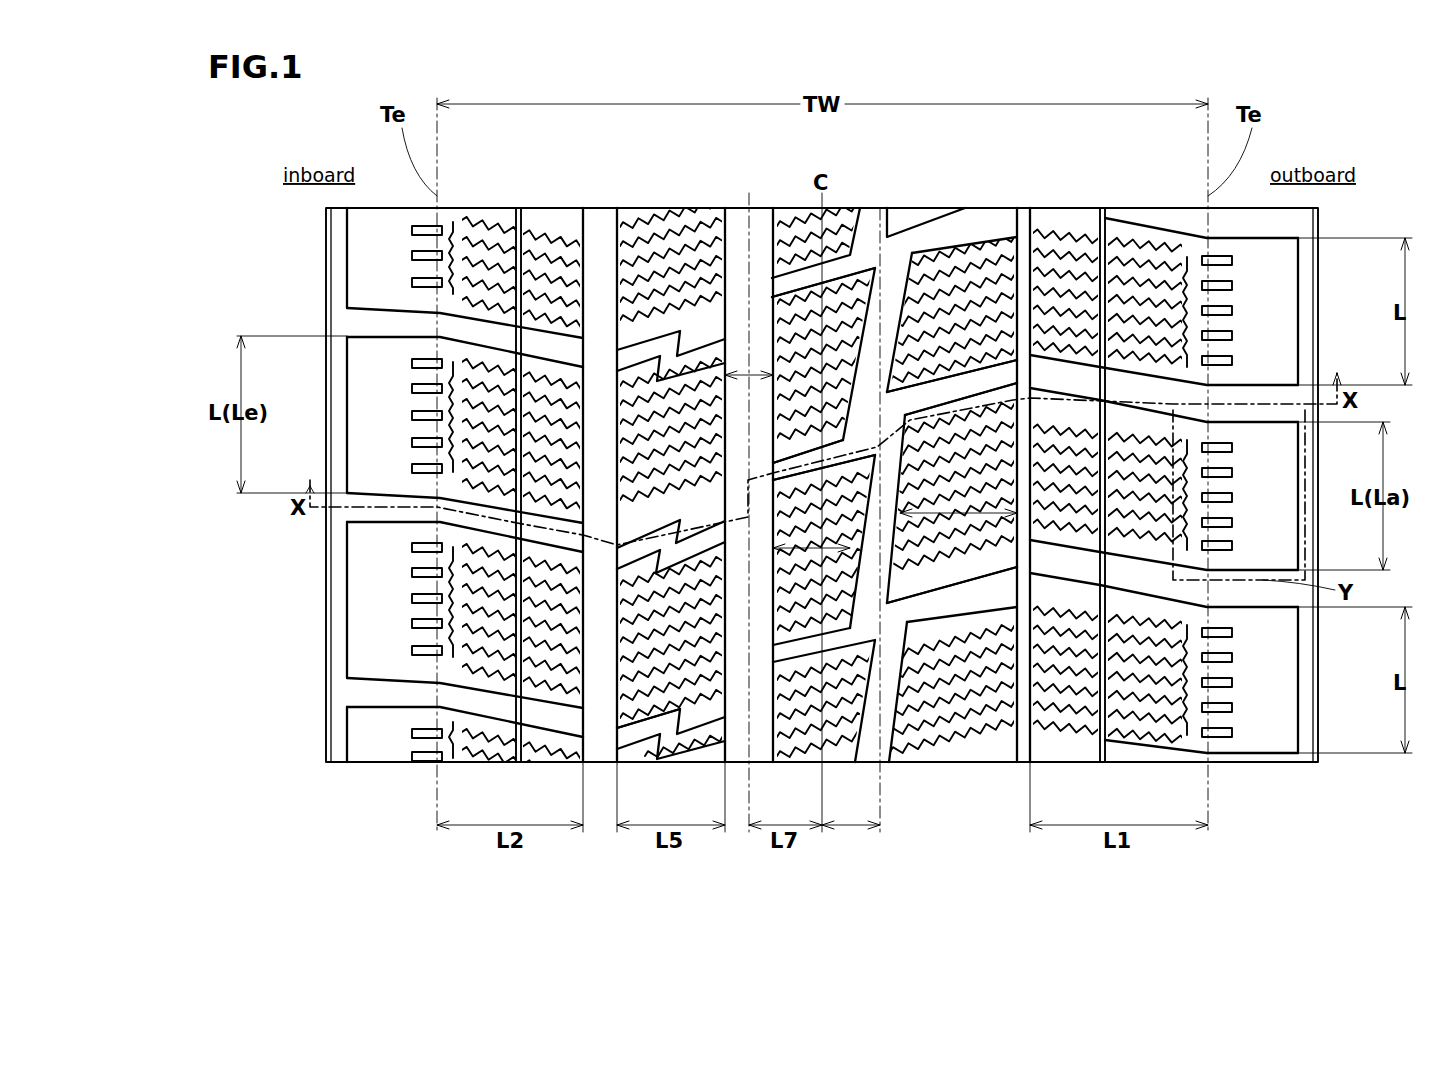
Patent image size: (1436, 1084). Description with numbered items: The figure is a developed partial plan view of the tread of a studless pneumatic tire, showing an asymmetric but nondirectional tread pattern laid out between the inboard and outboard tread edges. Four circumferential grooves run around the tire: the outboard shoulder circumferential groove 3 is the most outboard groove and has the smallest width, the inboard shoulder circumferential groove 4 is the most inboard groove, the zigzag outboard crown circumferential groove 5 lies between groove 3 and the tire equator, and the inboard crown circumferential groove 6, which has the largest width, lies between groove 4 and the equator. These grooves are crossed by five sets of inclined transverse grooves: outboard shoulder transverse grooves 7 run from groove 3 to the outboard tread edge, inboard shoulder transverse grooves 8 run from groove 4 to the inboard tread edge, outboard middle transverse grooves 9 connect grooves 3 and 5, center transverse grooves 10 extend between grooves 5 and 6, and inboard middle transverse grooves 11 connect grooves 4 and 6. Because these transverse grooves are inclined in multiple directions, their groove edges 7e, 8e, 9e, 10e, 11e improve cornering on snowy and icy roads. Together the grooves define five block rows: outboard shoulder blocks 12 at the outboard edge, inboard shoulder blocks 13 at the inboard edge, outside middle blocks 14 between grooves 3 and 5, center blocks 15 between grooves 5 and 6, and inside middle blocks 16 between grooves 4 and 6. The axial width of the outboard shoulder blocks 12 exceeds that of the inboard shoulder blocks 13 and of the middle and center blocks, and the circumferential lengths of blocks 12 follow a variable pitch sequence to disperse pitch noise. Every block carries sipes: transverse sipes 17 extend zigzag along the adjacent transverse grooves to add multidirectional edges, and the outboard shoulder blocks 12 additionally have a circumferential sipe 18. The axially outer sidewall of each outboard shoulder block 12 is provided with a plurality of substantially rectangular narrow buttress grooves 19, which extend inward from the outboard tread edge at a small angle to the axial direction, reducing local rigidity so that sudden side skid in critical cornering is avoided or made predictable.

The outboard shoulder circumferential groove 3 is at (1023, 250).
The inboard shoulder circumferential groove 4 is at (597, 248).
The outboard crown circumferential groove 5 is at (870, 245).
The inboard crown circumferential groove 6 is at (736, 245).
The outboard shoulder transverse grooves 7 is at (1140, 385).
The groove edges of outboard shoulder transverse grooves 7e is at (1130, 387).
The inboard shoulder transverse grooves 8 is at (590, 362).
The groove edges of inboard shoulder transverse grooves 8e is at (470, 722).
The outboard middle transverse grooves 9 is at (948, 600).
The groove edges of outboard middle transverse grooves 9e is at (960, 455).
The center transverse grooves 10 is at (836, 640).
The groove edges of center transverse grooves 10e is at (772, 300).
The inboard middle transverse grooves 11 is at (624, 742).
The groove edges of inboard middle transverse grooves 11e is at (655, 335).
The outboard shoulder blocks 12 is at (1090, 240).
The inboard shoulder blocks 13 is at (530, 206).
The outside middle blocks 14 is at (935, 265).
The center blocks 15 is at (802, 218).
The inside middle blocks 16 is at (662, 216).
The transverse sipes 17 is at (545, 690).
The circumferential sipe 18 is at (452, 460).
The narrow buttress grooves 19 is at (430, 392).